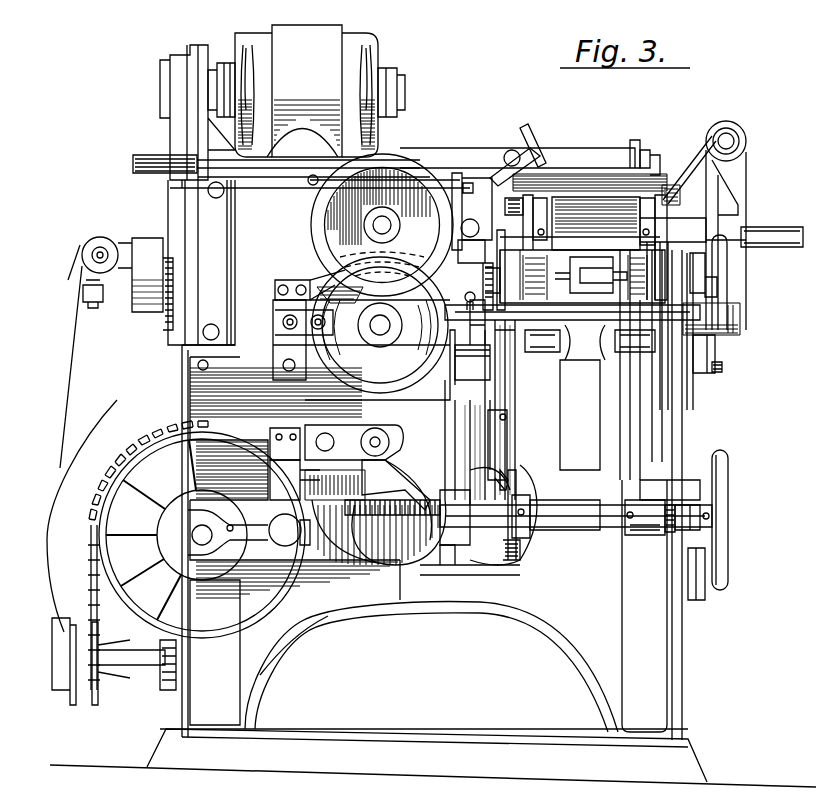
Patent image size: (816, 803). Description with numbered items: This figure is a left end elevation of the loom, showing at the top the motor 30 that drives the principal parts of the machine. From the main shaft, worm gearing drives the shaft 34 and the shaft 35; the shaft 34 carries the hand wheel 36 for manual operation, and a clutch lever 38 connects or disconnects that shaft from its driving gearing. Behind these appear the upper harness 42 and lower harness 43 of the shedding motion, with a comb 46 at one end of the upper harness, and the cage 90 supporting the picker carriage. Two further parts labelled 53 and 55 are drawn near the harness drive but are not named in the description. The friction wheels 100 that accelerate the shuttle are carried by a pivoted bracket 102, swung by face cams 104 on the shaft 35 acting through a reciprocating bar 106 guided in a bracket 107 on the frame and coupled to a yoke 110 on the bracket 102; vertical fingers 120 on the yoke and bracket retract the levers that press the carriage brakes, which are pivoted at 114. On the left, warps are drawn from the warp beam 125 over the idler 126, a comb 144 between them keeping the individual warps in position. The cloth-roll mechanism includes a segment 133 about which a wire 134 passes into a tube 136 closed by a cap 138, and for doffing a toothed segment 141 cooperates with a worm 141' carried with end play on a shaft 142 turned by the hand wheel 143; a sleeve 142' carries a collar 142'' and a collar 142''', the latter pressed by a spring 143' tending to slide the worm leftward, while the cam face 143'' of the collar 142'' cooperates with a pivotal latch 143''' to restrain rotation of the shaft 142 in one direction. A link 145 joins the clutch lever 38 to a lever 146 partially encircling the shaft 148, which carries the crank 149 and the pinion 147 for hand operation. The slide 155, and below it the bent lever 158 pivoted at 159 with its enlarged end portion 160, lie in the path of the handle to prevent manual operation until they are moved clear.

The motor 30 is at (352, 38).
The shaft 34 is at (383, 223).
The shaft 35 is at (377, 330).
The hand wheel 36 is at (420, 170).
The clutch lever 38 is at (540, 162).
The upper harness 42 is at (604, 158).
The lower harness 43 is at (655, 178).
The comb 46 is at (638, 150).
The stud 53 is at (470, 219).
The lever plate 55 is at (508, 165).
The cage 90 is at (578, 200).
The friction wheels 100 is at (598, 198).
The bracket 102 is at (620, 285).
The face cams 104 is at (394, 386).
The reciprocating bar 106 is at (333, 275).
The bracket 107 is at (280, 300).
The yoke 110 is at (510, 300).
The pivot 114 is at (568, 196).
The vertical fingers 120 is at (530, 212).
The warp beam 125 is at (62, 490).
The idler 126 is at (100, 244).
The segment 133 is at (420, 558).
The wire 134 is at (372, 440).
The tube 136 is at (530, 562).
The cap 138 is at (455, 556).
The toothed segment 141 is at (412, 467).
The worm 141' is at (346, 578).
The shaft 142 is at (295, 480).
The sleeve 142' is at (565, 506).
The collar 142'' is at (535, 506).
The collar 142''' is at (663, 502).
The hand wheel 143 is at (728, 515).
The spring 143' is at (652, 537).
The cam face 143'' is at (499, 515).
The pivotal latch 143''' is at (536, 450).
The comb 144 is at (84, 292).
The link 145 is at (458, 176).
The lever 146 is at (399, 225).
The pinion 147 is at (476, 320).
The shaft 148 is at (625, 338).
The crank 149 is at (741, 252).
The slide 155 is at (720, 298).
The bent lever 158 is at (712, 356).
The pivot 159 is at (722, 368).
The end portion 160 is at (732, 343).